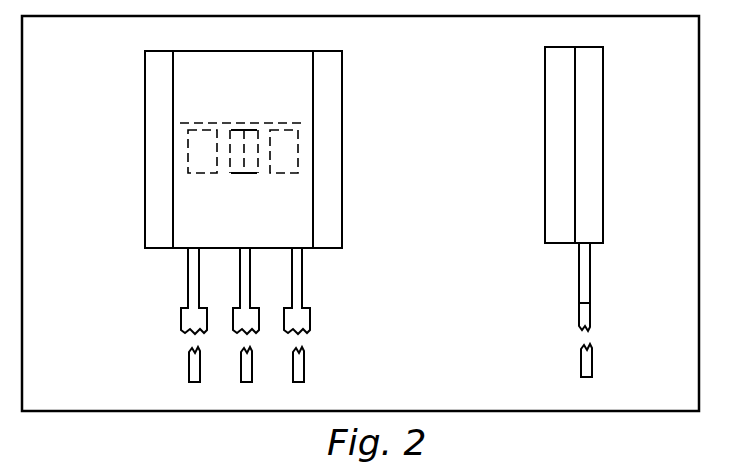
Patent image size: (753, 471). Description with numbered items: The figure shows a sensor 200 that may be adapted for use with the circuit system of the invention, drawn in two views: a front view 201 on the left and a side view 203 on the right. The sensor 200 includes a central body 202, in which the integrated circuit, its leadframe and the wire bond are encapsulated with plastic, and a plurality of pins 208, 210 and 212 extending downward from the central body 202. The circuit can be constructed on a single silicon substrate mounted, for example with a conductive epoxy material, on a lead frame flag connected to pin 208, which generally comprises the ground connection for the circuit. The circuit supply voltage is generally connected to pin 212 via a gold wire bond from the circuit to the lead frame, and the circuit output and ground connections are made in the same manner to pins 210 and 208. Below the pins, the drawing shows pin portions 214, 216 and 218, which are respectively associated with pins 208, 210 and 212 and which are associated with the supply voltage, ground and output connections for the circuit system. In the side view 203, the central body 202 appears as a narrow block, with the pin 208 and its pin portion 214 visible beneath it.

The sensor 200 is at (83, 66).
The front view 201 is at (358, 95).
The central body 202 is at (342, 175).
The side view 203 is at (527, 94).
The pin 208 is at (188, 263).
The pin 210 is at (240, 300).
The pin 212 is at (302, 277).
The pin portion 214 is at (189, 358).
The pin portion 216 is at (241, 366).
The pin portion 218 is at (303, 361).